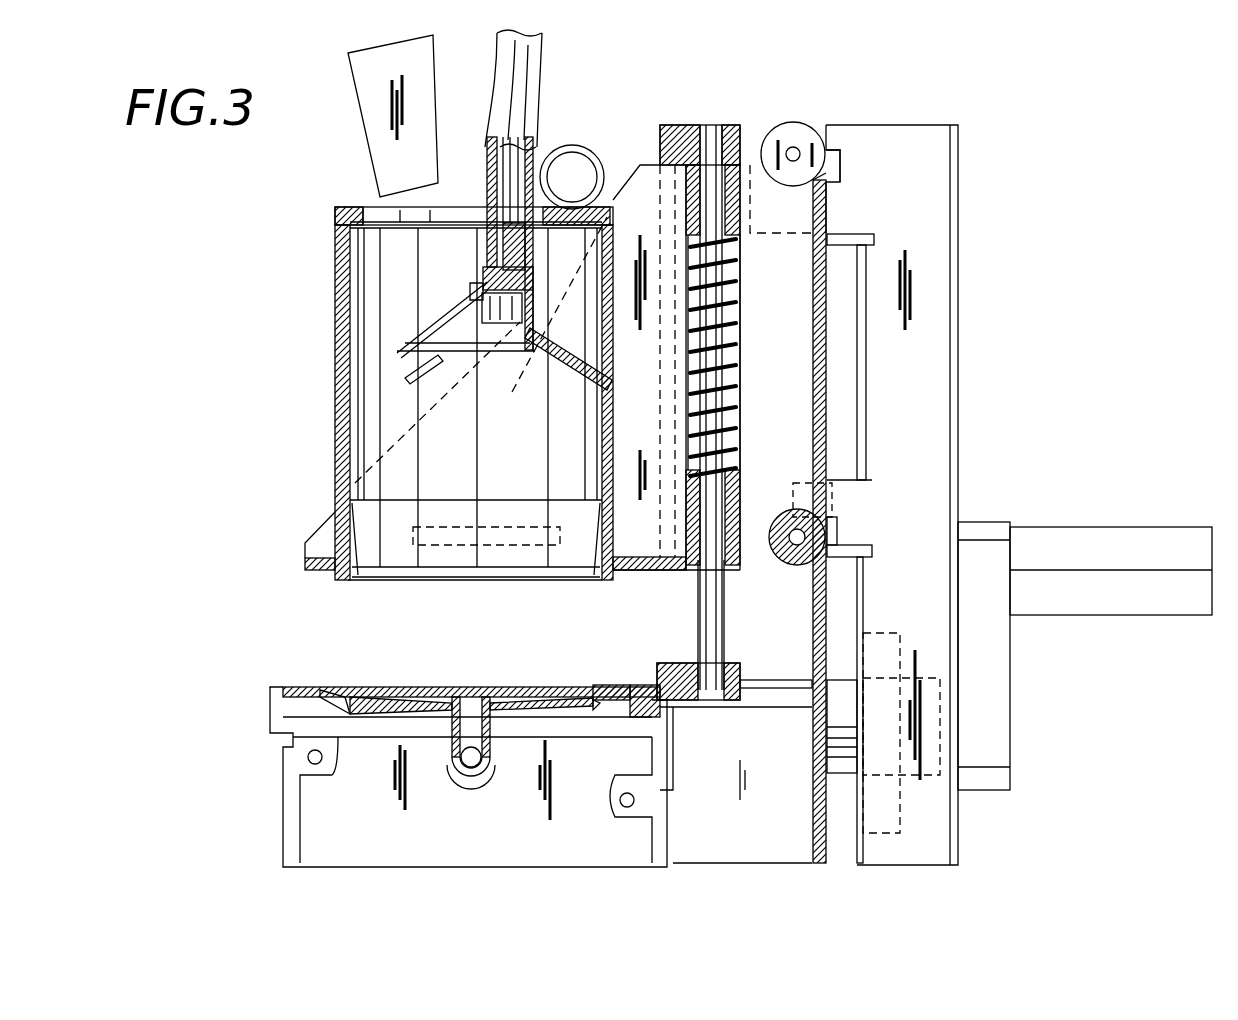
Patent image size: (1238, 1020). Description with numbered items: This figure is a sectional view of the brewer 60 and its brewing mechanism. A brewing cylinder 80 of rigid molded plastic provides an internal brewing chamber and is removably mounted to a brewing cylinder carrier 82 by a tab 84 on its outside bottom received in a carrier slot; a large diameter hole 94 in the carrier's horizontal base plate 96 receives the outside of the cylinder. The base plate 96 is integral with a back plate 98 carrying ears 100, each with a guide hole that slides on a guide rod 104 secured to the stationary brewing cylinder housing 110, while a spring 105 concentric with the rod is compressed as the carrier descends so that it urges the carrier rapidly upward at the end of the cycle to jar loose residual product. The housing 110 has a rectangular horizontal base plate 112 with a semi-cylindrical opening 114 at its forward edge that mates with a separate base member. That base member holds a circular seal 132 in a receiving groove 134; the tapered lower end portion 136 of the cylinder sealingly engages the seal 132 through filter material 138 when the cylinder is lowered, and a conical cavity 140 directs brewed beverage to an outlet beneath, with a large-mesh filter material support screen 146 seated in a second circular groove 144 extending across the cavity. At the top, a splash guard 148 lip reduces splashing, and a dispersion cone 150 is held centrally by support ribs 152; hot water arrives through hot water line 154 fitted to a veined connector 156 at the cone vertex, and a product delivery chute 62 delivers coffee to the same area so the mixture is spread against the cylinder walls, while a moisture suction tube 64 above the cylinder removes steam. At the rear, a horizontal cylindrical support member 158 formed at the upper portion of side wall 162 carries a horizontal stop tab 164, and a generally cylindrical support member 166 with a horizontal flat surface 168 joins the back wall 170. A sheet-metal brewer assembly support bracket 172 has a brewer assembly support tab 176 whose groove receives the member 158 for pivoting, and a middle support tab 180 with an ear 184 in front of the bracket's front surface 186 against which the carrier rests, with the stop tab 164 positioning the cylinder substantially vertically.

The brewer 60 is at (312, 298).
The product delivery chute 62 is at (415, 82).
The moisture suction tube 64 is at (583, 147).
The brewing cylinder 80 is at (334, 376).
The brewing cylinder carrier 82 is at (632, 167).
The tab 84 is at (528, 545).
The large diameter hole 94 is at (320, 572).
The horizontal base plate 96 is at (303, 567).
The back plate 98 is at (740, 356).
The ear 100 is at (737, 218).
The guide rod 104 is at (738, 330).
The spring 105 is at (740, 400).
The brewing cylinder housing 110 is at (727, 118).
The horizontal base plate 112 is at (703, 705).
The semi-cylindrical opening 114 is at (613, 684).
The seal 132 is at (330, 690).
The receiving groove 134 is at (330, 689).
The lower end portion 136 is at (348, 530).
The filter material 138 is at (438, 678).
The conical cavity 140 is at (403, 699).
The second circular groove 144 is at (368, 742).
The filter material support screen 146 is at (545, 695).
The splash guard 148 is at (377, 207).
The dispersion cone 150 is at (408, 340).
The support rib 152 is at (585, 367).
The hot water line 154 is at (538, 82).
The veined connector 156 is at (487, 240).
The horizontal cylindrical support member 158 is at (792, 130).
The side wall 162 is at (672, 140).
The horizontal stop tab 164 is at (842, 150).
The generally cylindrical support member 166 is at (785, 547).
The horizontal flat surface 168 is at (826, 503).
The back wall 170 is at (827, 629).
The brewer assembly support bracket 172 is at (917, 510).
The brewer assembly support tab 176 is at (836, 217).
The support tab 180 is at (840, 497).
The ear 184 is at (828, 535).
The front surface 186 is at (862, 302).